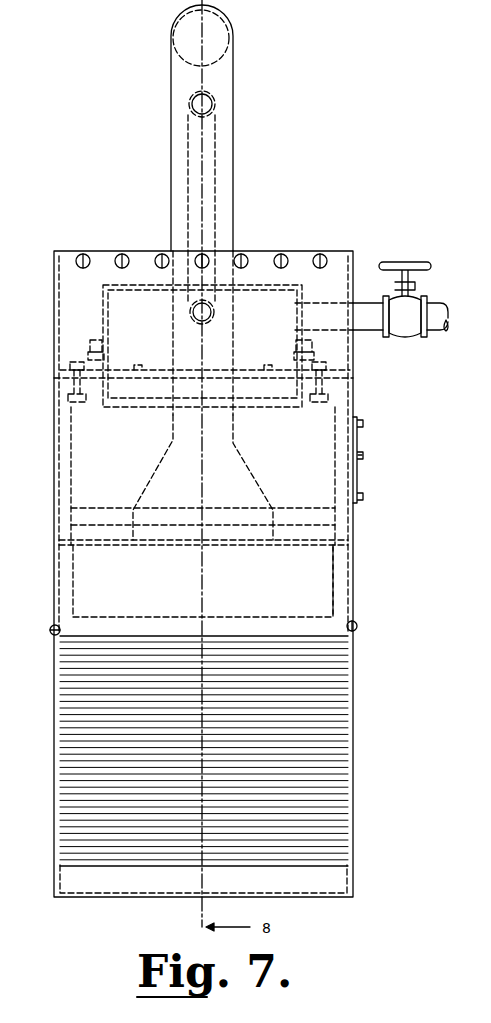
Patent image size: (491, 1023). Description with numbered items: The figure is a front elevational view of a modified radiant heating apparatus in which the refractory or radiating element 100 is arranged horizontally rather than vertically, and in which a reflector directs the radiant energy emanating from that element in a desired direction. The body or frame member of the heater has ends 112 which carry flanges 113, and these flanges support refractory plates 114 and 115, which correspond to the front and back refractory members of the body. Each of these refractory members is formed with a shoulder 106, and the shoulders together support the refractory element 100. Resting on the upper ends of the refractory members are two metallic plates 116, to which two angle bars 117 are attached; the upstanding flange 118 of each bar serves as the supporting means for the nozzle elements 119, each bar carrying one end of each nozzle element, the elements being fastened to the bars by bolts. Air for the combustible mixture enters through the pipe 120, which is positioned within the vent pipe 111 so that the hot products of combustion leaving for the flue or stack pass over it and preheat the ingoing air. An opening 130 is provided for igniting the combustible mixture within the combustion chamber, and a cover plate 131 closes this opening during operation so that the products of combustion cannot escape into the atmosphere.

The refractory or radiating element 100 is at (313, 543).
The shoulder 106 is at (71, 545).
The vent pipe 111 is at (225, 203).
The ends of the member 112 is at (57, 747).
The flanges 113 is at (57, 633).
The refractory plate 114 is at (73, 587).
The refractory plate 115 is at (343, 595).
The metallic plates 116 is at (68, 378).
The angle bars 117 is at (60, 372).
The upstanding flange 118 is at (100, 345).
The nozzle elements 119 is at (280, 295).
The pipe 120 is at (205, 158).
The opening 130 is at (340, 487).
The cover plate 131 is at (353, 470).